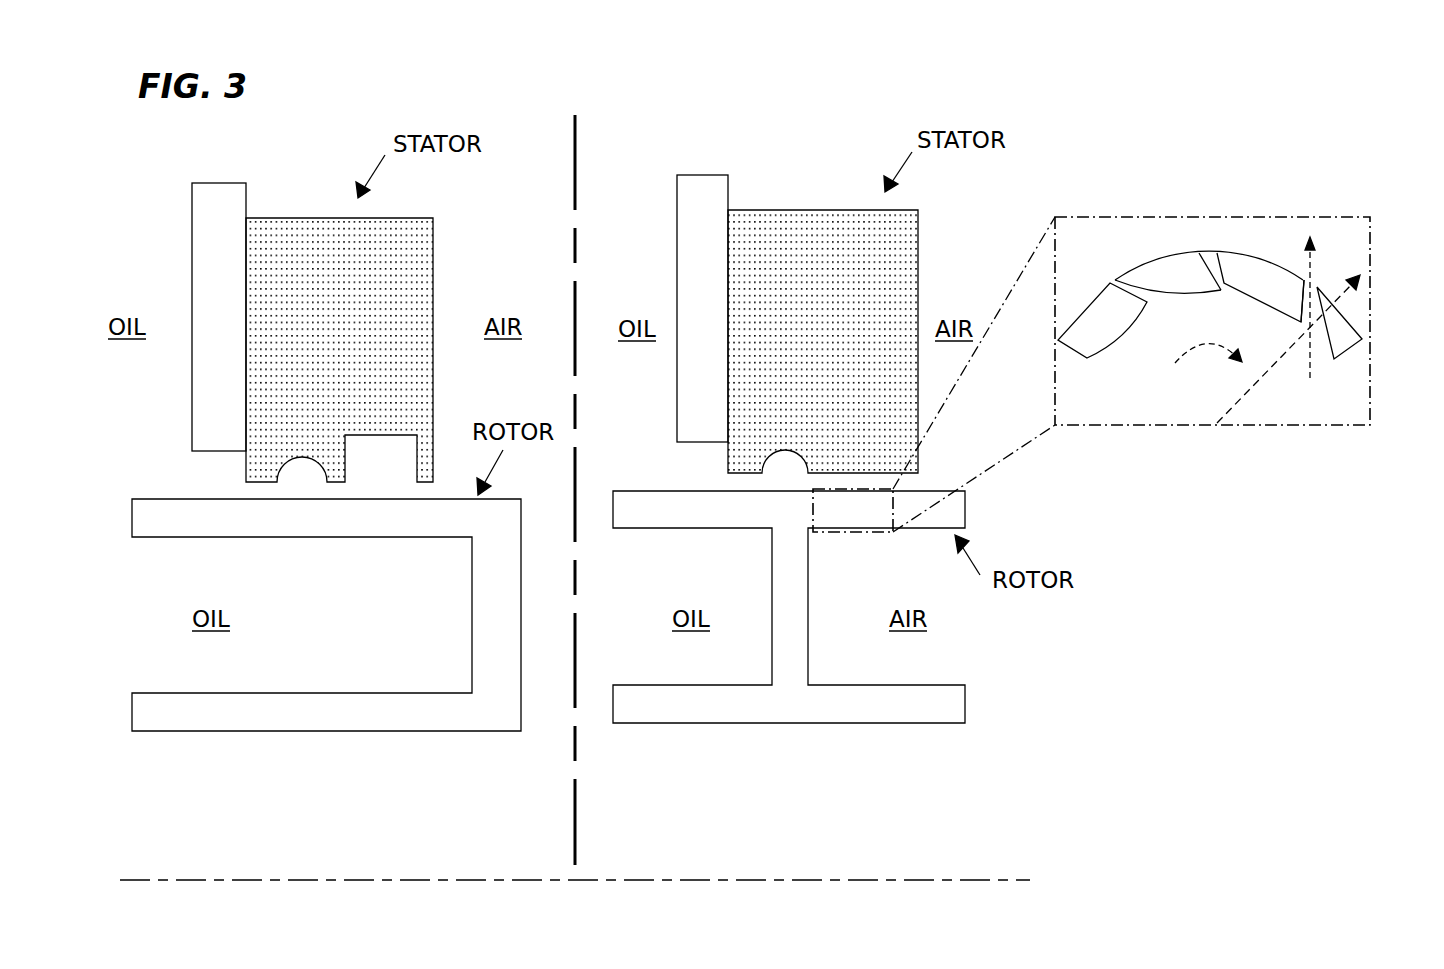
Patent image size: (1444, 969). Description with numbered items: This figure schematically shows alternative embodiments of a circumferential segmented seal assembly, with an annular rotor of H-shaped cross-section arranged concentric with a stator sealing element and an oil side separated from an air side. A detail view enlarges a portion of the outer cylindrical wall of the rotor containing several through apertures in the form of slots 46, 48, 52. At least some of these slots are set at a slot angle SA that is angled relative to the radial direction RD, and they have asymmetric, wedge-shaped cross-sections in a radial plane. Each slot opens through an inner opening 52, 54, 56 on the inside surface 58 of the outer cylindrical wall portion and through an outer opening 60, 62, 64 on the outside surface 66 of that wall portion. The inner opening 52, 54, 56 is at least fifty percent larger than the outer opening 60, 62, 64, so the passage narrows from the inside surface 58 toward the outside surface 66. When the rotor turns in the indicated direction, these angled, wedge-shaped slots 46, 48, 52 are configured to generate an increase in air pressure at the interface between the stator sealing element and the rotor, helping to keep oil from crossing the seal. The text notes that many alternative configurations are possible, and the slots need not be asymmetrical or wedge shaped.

The slot 46 is at (1135, 293).
The slot 48 is at (1217, 262).
The slot 52 is at (1304, 302).
The inner opening 54 is at (1232, 284).
The inner opening 56 is at (1310, 327).
The inside surface 58 is at (1112, 330).
The outer opening 60 is at (1108, 283).
The outer opening 62 is at (1198, 253).
The outer opening 64 is at (1317, 288).
The outside surface 66 is at (1084, 308).
The slot angle SA is at (1313, 262).
The radial direction RD is at (1260, 365).